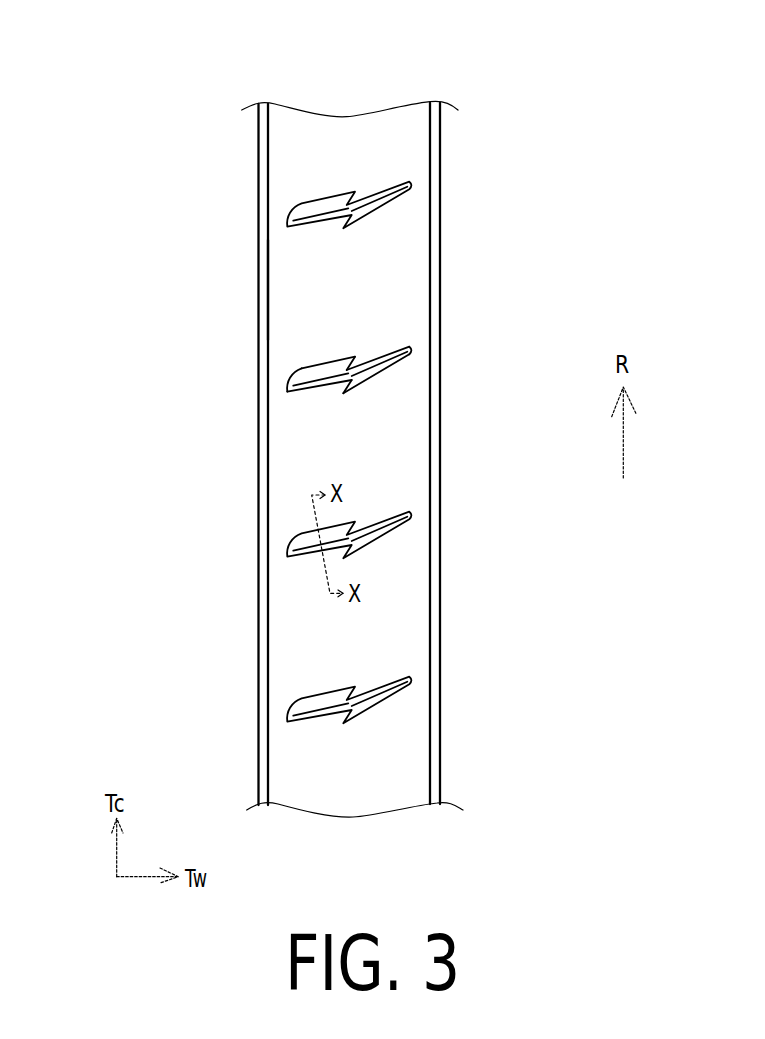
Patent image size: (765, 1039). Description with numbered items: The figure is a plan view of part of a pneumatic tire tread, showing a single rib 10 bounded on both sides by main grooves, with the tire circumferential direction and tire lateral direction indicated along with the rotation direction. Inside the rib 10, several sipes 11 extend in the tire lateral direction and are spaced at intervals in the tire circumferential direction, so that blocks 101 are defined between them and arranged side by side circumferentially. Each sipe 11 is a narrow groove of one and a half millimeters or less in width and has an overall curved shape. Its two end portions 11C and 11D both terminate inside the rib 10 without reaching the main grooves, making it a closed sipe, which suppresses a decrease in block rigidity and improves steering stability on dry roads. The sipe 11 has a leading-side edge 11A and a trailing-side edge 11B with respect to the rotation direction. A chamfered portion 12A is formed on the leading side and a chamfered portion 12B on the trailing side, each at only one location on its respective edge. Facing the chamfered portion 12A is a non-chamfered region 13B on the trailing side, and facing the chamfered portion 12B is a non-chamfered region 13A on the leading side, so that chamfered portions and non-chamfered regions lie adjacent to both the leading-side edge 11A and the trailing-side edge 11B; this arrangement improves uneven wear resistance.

The rib 10 is at (450, 79).
The block 101 is at (355, 267).
The sipe 11 is at (403, 363).
The leading-side edge 11A is at (333, 373).
The trailing-side edge 11B is at (364, 382).
The end portion 11C is at (406, 348).
The end portion 11D is at (295, 395).
The leading-side chamfered portion 12A is at (303, 377).
The trailing-side chamfered portion 12B is at (389, 370).
The leading-side non-chamfered region 13A is at (397, 347).
The trailing-side non-chamfered region 13B is at (314, 397).